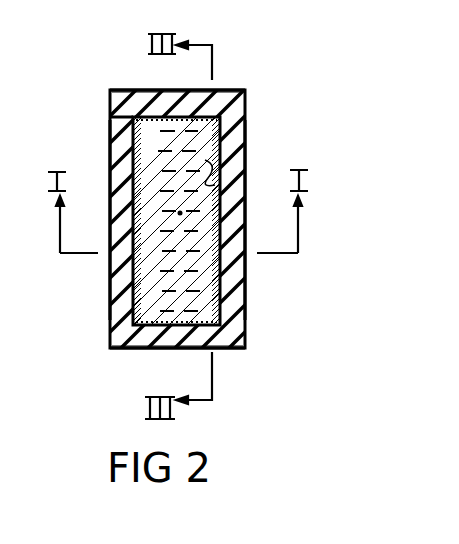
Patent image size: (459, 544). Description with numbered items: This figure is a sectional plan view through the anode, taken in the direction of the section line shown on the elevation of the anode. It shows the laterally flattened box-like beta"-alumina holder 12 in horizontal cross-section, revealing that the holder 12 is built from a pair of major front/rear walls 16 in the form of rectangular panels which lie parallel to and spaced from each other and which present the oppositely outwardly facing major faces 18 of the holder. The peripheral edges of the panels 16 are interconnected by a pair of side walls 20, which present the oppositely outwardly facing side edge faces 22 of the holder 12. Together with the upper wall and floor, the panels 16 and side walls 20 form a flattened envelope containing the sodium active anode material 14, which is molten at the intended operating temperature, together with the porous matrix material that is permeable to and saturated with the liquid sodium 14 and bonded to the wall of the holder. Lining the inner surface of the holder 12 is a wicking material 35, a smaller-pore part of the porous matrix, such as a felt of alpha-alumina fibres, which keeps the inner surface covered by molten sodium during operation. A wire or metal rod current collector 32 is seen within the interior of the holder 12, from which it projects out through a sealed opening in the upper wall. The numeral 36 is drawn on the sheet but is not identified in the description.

The burner assembly 12 is at (266, 114).
The inner wall / liner 14 is at (112, 123).
The porous matrix 16 is at (112, 210).
The side wall 18 is at (254, 152).
The end wall 20 is at (215, 100).
The outer surface 22 is at (143, 86).
The aperture 32 is at (137, 298).
The passage 35 is at (150, 184).
The element 36 is at (278, 515).